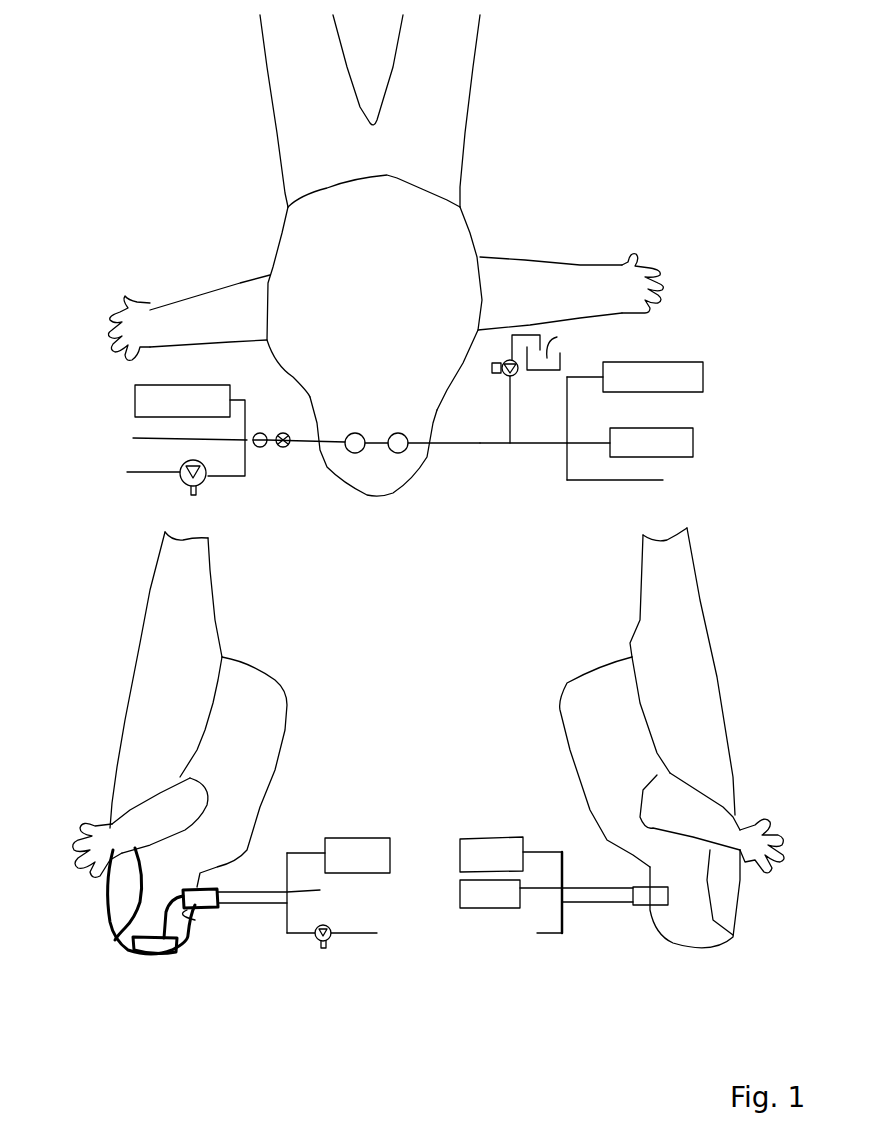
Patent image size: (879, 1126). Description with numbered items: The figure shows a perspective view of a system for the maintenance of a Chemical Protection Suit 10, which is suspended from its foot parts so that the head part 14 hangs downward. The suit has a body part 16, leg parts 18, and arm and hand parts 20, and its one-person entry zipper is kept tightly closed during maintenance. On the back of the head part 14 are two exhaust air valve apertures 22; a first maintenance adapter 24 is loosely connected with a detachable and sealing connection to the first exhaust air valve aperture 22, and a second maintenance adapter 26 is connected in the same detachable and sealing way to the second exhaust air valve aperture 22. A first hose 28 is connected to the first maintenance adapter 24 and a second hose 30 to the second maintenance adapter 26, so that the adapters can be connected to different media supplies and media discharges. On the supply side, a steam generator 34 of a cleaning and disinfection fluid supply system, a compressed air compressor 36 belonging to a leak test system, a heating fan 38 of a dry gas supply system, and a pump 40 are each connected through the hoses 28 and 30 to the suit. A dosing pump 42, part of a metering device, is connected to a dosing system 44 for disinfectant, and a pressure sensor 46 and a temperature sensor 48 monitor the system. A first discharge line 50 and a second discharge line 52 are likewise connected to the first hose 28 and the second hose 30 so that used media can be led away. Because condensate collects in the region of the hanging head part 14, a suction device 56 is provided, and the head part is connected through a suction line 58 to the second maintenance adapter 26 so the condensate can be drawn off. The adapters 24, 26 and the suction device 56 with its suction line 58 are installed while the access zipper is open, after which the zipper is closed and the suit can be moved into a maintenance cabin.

The Chemical Protection Suit 10 is at (443, 230).
The head part 14 is at (367, 480).
The body part 16 is at (302, 257).
The leg parts 18 is at (282, 65).
The arm and hand parts 20 is at (182, 310).
The exhaust air valve apertures 22 is at (355, 453).
The first maintenance adapter 24 is at (400, 447).
The second maintenance adapter 26 is at (346, 447).
The first hose 28 is at (480, 445).
The second hose 30 is at (305, 447).
The steam generator 34 is at (693, 366).
The compressed air compressor 36 is at (687, 432).
The heating fan 38 is at (137, 399).
The pump 40 is at (208, 478).
The dosing pump 42 is at (517, 375).
The dosing system 44 is at (551, 351).
The pressure sensor 46 is at (262, 432).
The temperature sensor 48 is at (284, 432).
The first discharge line 50 is at (615, 481).
The second discharge line 52 is at (150, 440).
The suction device 56 is at (178, 947).
The suction line 58 is at (188, 928).